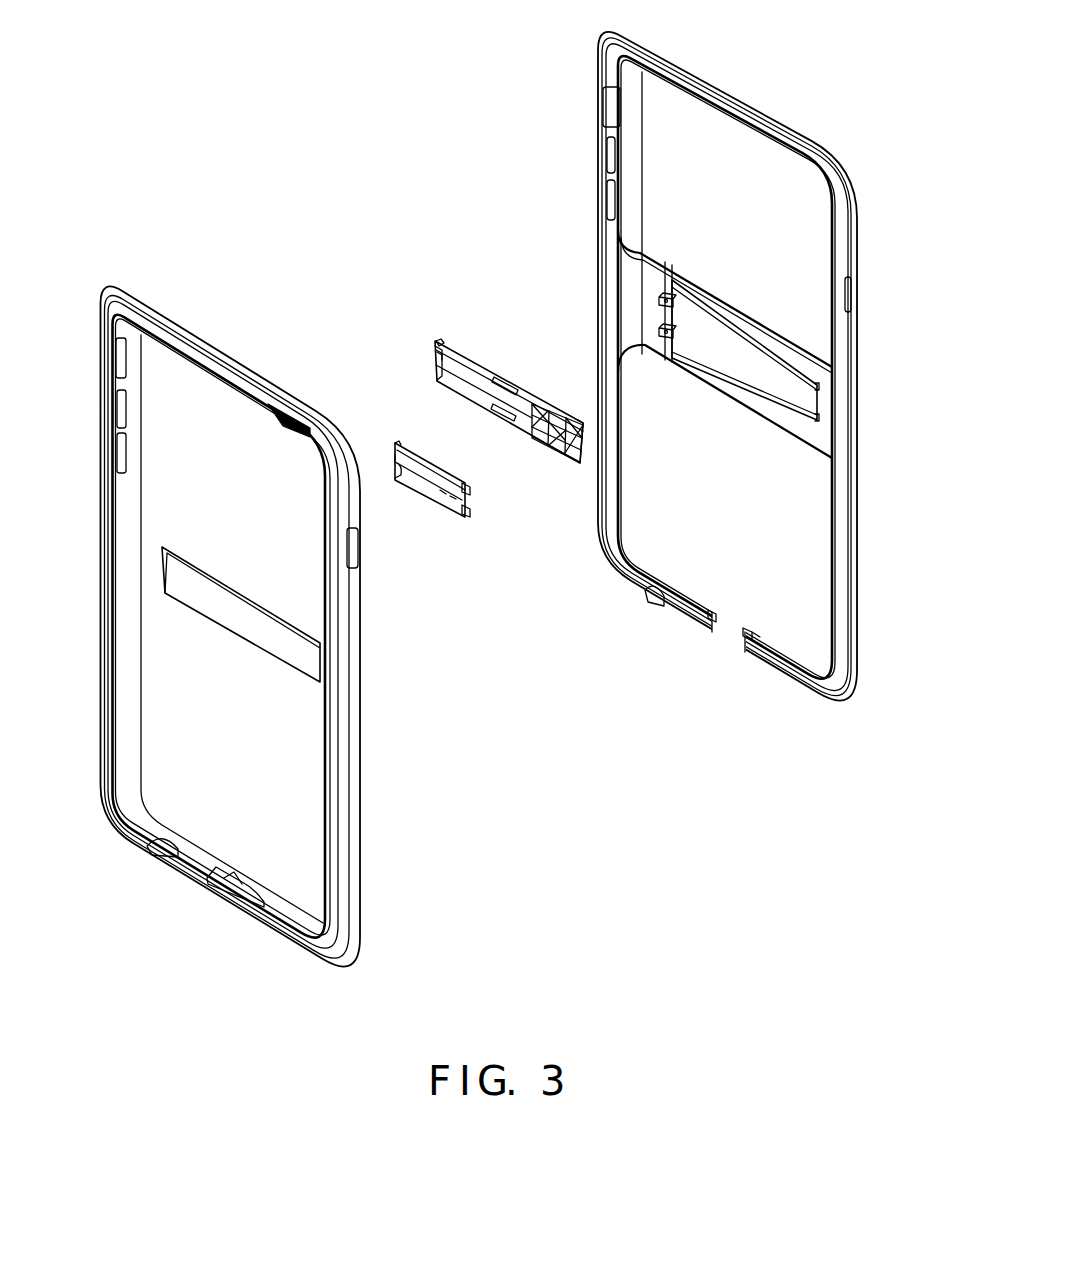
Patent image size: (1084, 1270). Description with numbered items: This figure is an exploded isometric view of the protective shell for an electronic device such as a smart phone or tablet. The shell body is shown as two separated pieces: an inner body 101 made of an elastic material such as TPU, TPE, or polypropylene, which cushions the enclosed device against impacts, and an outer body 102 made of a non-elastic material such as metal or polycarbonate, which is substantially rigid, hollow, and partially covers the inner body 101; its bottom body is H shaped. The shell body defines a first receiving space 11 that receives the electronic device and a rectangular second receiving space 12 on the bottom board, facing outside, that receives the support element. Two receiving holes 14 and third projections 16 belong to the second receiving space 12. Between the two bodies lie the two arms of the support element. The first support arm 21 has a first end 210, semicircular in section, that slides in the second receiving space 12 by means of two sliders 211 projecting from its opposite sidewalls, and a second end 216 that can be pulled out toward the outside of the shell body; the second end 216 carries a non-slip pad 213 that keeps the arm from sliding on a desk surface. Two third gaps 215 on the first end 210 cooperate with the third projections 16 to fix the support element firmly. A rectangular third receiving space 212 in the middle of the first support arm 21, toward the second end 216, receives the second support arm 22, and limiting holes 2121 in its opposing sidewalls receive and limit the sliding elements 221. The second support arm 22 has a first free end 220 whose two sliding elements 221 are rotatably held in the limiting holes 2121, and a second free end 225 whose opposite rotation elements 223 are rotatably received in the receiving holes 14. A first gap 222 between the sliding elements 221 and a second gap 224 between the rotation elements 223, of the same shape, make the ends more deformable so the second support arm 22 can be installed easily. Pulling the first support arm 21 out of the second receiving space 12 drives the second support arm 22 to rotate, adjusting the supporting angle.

The inner body 101 is at (347, 888).
The outer body 102 is at (843, 652).
The first receiving space 11 is at (303, 777).
The second receiving space 12 is at (298, 645).
The receiving holes 14 is at (661, 297).
The third projections 16 is at (821, 414).
The first support arm 21 is at (480, 420).
The first end 210 is at (588, 440).
The sliders 211 is at (567, 460).
The third receiving space 212 is at (450, 370).
The non-slip pad 213 is at (438, 345).
The third gaps 215 is at (575, 440).
The second end 216 is at (437, 355).
The limiting holes 2121 is at (505, 379).
The second support arm 22 is at (455, 488).
The first free end 220 is at (443, 498).
The sliding elements 221 is at (468, 513).
The first gap 222 is at (453, 497).
The rotation elements 223 is at (398, 443).
The second gap 224 is at (395, 462).
The second free end 225 is at (406, 478).